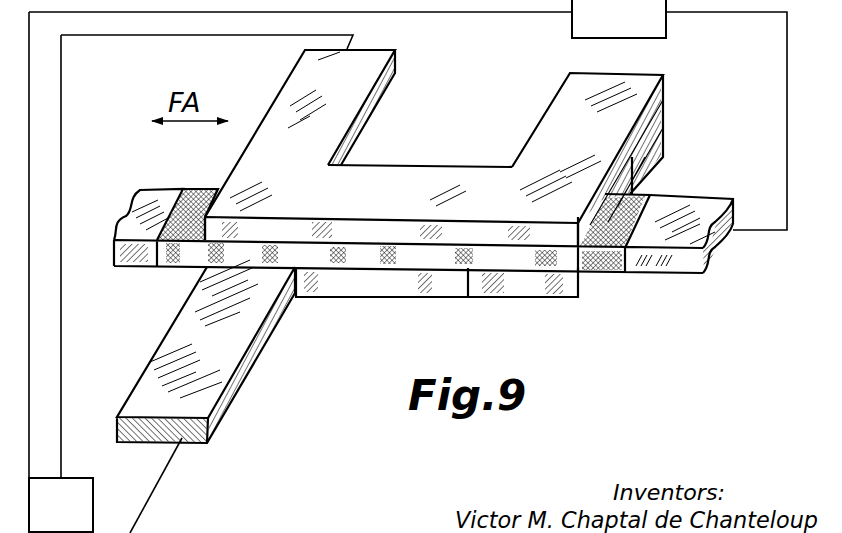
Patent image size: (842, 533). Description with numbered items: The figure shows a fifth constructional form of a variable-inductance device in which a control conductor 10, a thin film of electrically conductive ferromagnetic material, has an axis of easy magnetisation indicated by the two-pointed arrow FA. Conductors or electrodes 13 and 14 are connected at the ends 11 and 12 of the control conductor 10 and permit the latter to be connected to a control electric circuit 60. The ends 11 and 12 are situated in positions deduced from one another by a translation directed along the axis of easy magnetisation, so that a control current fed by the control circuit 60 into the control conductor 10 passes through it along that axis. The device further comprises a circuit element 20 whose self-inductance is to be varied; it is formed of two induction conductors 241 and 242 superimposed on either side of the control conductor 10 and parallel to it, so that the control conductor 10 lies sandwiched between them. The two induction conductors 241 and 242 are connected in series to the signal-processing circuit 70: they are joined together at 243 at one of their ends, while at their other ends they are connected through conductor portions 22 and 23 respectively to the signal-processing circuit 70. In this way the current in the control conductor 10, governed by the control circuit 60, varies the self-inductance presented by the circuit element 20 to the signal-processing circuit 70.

The control conductor 10 is at (473, 263).
The end of the control conductor 11 is at (200, 200).
The end of the control conductor 12 is at (634, 206).
The electrode 13 is at (157, 200).
The electrode 14 is at (696, 204).
The circuit element 20 is at (468, 135).
The conductor portion 22 is at (178, 332).
The conductor portion 23 is at (303, 72).
The control electric circuit 60 is at (408, 115).
The signal-processing circuit 70 is at (191, 272).
The induction conductor 241 is at (391, 283).
The induction conductor 242 is at (430, 174).
The connection of the induction conductors 243 is at (660, 150).